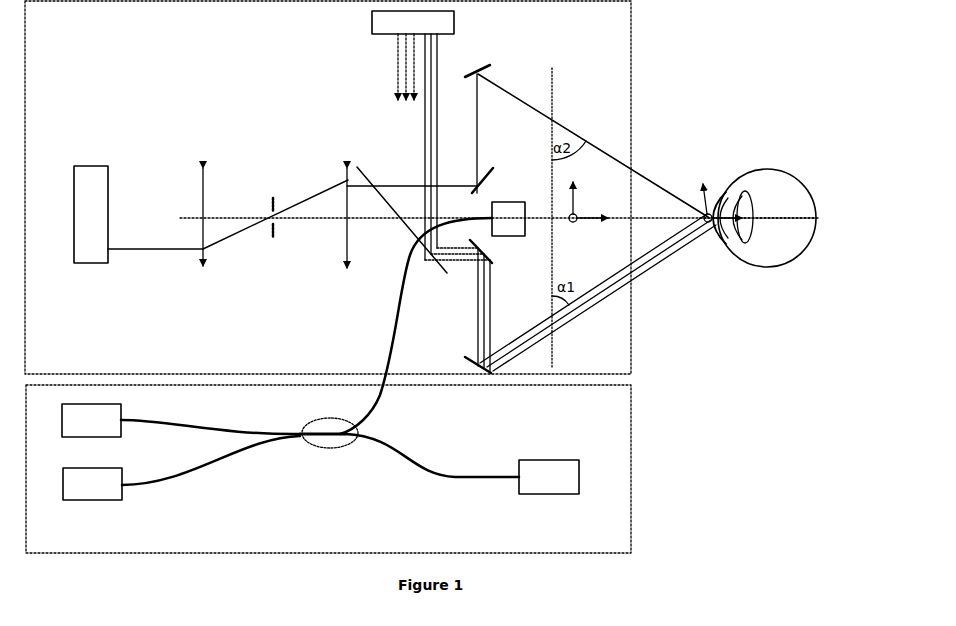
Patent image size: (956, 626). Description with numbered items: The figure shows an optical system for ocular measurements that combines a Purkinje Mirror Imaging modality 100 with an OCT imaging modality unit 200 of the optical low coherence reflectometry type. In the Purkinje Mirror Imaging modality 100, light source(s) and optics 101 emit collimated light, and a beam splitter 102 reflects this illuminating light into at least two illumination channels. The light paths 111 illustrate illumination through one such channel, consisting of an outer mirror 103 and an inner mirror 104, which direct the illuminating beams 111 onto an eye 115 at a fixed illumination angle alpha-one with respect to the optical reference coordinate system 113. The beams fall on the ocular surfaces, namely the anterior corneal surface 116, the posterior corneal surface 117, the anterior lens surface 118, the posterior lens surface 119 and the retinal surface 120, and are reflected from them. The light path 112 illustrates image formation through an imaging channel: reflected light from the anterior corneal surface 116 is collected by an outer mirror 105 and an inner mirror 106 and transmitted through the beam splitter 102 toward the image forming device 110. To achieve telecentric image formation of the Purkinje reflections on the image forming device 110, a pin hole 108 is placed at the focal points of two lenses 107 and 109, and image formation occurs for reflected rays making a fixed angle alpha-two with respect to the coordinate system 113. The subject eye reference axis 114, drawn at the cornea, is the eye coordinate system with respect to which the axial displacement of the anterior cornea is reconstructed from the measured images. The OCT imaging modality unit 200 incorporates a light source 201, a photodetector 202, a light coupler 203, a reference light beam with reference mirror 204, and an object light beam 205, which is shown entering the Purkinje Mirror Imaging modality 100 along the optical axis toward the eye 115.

The Purkinje Mirror Imaging modality 100 is at (328, 187).
The light source(s) and optics 101 is at (413, 55).
The beam splitter 102 is at (372, 172).
The outer mirror 103 is at (496, 251).
The inner mirror 104 is at (460, 362).
The outer mirror 105 is at (476, 62).
The inner mirror 106 is at (491, 170).
The lens 107 is at (330, 218).
The pin hole 108 is at (275, 208).
The lens 109 is at (218, 223).
The image forming device 110 is at (91, 214).
The light paths 111 is at (598, 292).
The light path 112 is at (593, 145).
The optical reference coordinate system 113 is at (588, 208).
The subject eye reference axis 114 is at (721, 199).
The eye 115 is at (767, 206).
The anterior corneal surface 116 is at (712, 238).
The posterior corneal surface 117 is at (718, 243).
The anterior lens surface 118 is at (734, 235).
The posterior lens surface 119 is at (755, 220).
The retinal surface 120 is at (772, 210).
The OCT imaging modality unit 200 is at (328, 469).
The light source 201 is at (181, 420).
The photodetector 202 is at (181, 468).
The light coupler 203 is at (329, 442).
The reference light beam with reference mirror 204 is at (459, 356).
The object light beam 205 is at (508, 219).